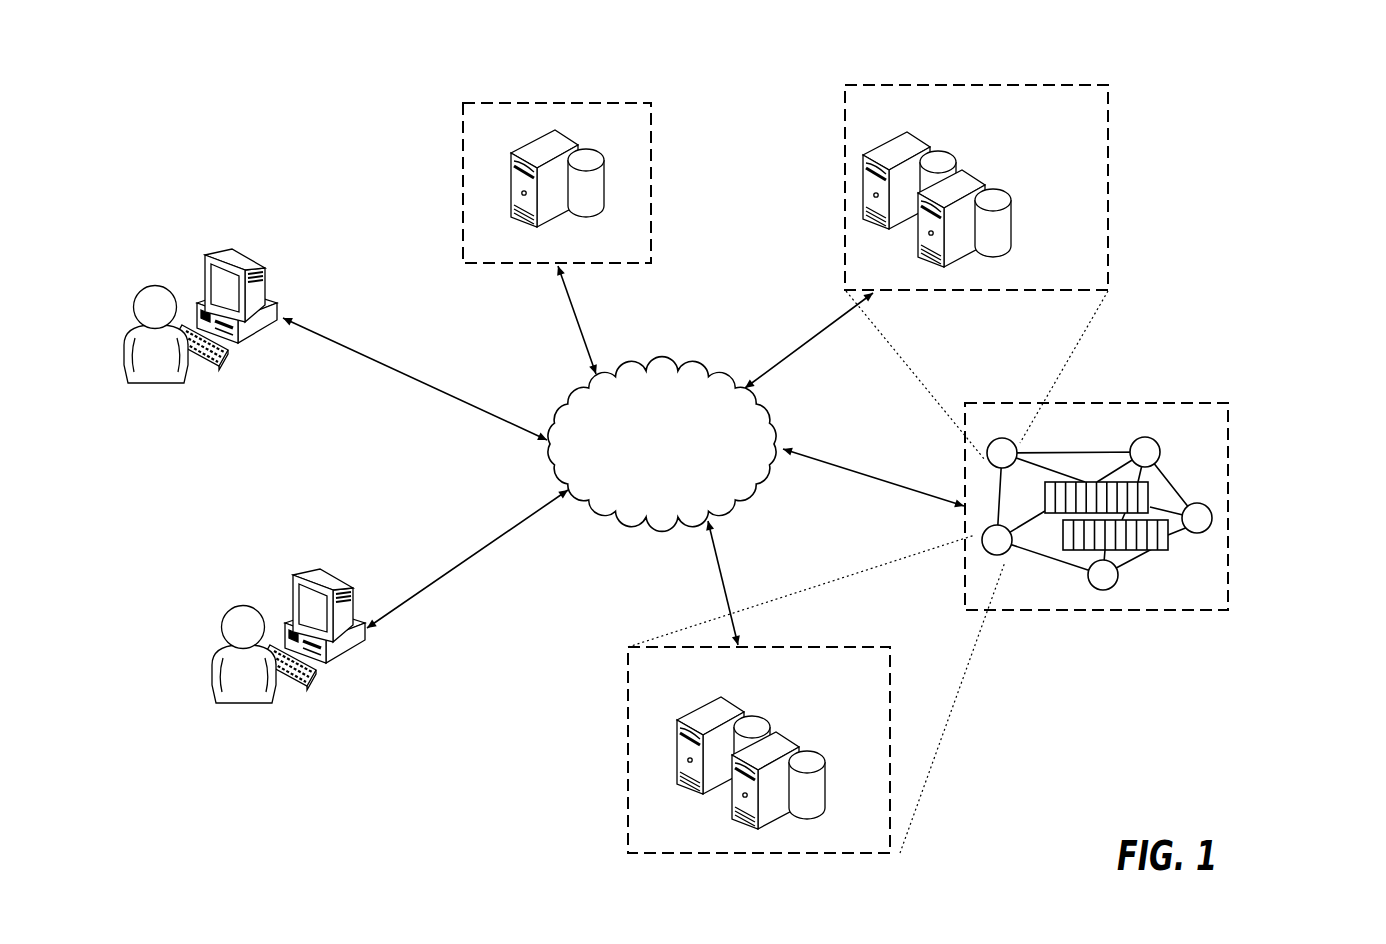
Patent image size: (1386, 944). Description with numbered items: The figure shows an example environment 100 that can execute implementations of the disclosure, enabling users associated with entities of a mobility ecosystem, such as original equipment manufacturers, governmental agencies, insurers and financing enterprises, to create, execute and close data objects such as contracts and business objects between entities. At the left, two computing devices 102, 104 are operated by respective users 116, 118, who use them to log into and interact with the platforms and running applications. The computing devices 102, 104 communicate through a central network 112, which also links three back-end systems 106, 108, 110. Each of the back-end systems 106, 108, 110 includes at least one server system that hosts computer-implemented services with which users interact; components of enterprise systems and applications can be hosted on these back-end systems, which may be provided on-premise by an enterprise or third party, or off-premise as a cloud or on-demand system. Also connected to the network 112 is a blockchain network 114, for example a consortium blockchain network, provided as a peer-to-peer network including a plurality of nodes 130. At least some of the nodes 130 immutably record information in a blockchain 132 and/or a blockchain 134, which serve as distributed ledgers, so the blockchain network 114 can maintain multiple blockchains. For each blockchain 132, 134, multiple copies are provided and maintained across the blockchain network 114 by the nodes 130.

The example environment 100 is at (1313, 113).
The computing device 102 is at (210, 255).
The computing device 104 is at (298, 575).
The back-end system 106 is at (1019, 187).
The back-end system 108 is at (721, 750).
The back-end system 110 is at (596, 156).
The network 112 is at (660, 370).
The blockchain network 114 is at (1137, 478).
The user 116 is at (155, 383).
The user 118 is at (243, 703).
The nodes 130 is at (1148, 496).
The blockchain 132 is at (1148, 494).
The blockchain 134 is at (1168, 536).